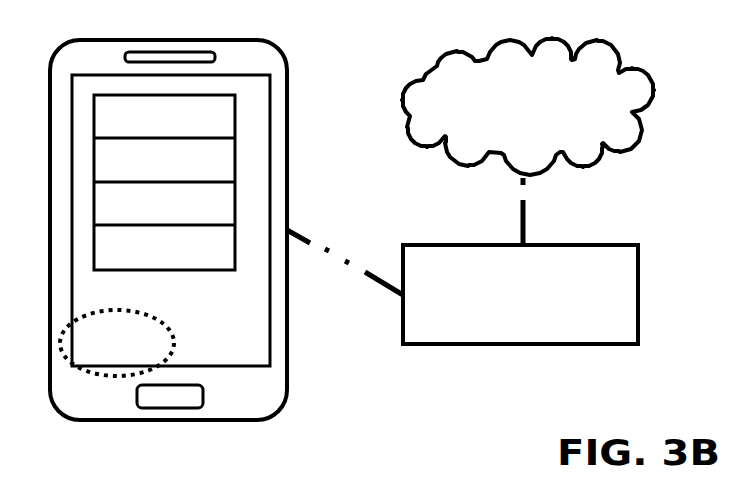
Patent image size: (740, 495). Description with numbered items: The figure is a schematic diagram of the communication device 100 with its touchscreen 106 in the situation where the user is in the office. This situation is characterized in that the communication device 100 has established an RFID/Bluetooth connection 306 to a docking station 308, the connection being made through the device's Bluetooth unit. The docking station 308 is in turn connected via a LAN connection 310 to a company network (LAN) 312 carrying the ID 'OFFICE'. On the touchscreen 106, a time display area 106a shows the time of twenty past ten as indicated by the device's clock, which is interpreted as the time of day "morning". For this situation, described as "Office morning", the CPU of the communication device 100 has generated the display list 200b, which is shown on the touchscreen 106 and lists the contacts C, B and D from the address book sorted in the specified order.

The communication device 100 is at (299, 75).
The touchscreen 106 is at (270, 340).
The time display area 106a is at (117, 374).
The display list 200b is at (107, 94).
The RFID/Bluetooth connection 306 is at (352, 268).
The docking station 308 is at (450, 347).
The LAN connection 310 is at (527, 222).
The company network (LAN) 312 is at (403, 105).